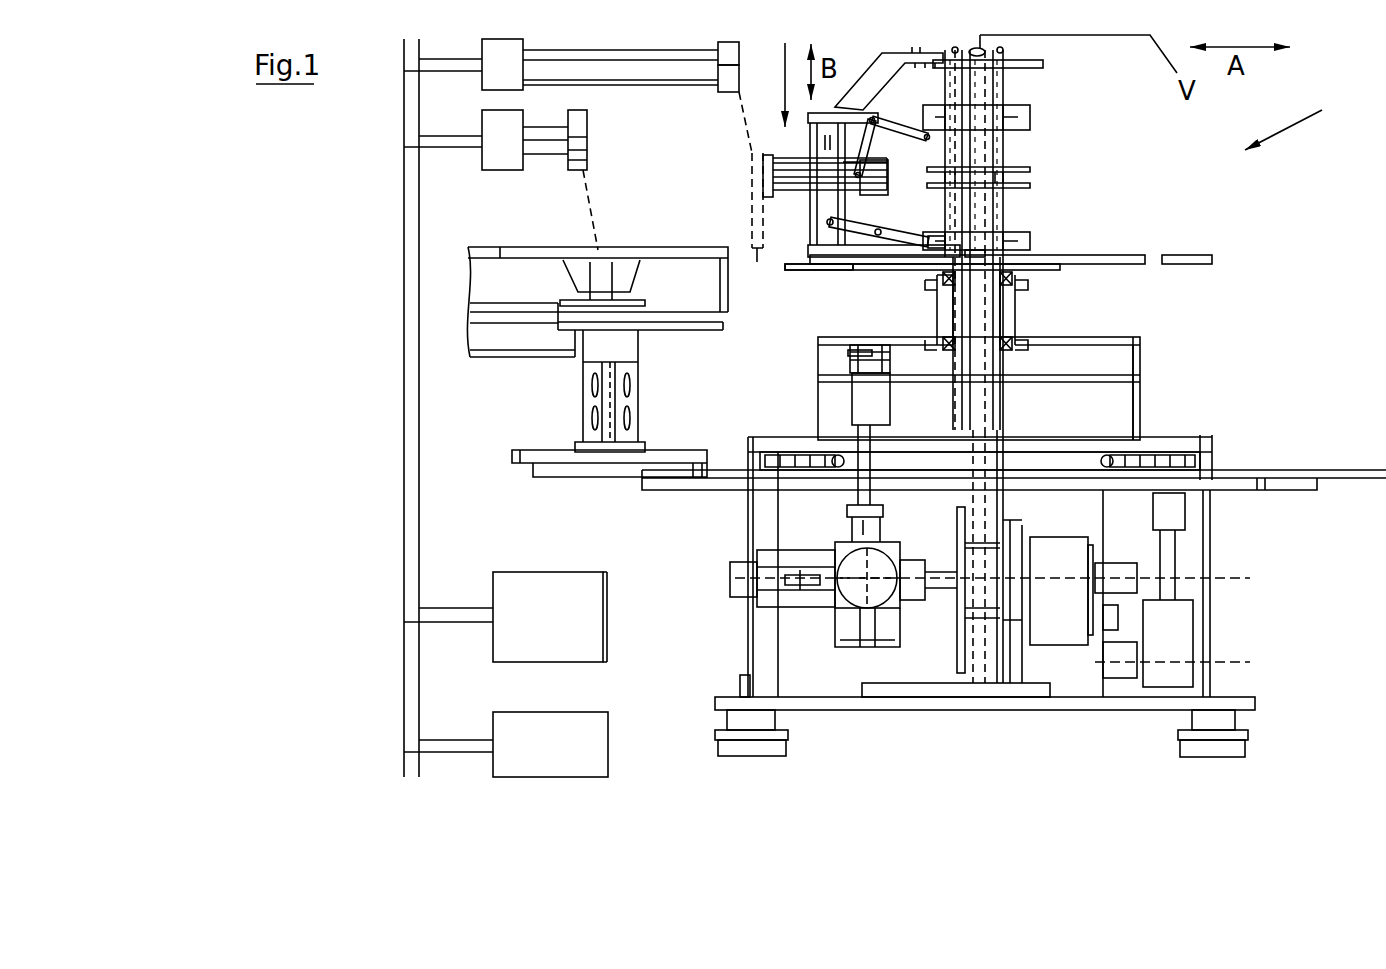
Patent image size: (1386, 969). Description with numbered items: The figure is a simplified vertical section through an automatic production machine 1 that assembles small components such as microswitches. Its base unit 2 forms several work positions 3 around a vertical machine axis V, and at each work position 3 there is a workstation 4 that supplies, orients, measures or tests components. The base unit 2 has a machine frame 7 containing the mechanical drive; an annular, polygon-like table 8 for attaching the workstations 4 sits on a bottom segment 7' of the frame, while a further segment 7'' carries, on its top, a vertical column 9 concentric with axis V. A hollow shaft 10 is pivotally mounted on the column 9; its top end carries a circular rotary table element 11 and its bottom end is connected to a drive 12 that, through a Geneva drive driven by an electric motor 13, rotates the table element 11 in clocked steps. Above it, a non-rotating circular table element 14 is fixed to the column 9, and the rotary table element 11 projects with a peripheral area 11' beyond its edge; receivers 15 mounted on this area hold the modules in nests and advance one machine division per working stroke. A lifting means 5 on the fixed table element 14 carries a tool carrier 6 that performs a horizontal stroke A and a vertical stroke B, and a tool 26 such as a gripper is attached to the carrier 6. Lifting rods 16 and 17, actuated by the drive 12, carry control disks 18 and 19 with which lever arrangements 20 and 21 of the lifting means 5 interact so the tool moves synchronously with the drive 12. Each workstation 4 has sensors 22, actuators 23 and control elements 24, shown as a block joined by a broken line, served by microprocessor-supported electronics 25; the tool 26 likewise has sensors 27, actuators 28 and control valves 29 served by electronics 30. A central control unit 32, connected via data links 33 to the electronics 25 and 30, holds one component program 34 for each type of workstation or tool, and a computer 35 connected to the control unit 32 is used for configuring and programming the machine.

The automatic production machine 1 is at (1296, 118).
The base unit 2 is at (1150, 357).
The work position 3 is at (683, 143).
The workstation 4 is at (645, 215).
The lifting means 5 is at (775, 85).
The tool carrier 6 is at (755, 152).
The machine frame 7 is at (1027, 593).
The bottom segment of the machine frame 7' is at (1274, 593).
The segment of the machine frame 7'' is at (1217, 392).
The annular table 8 is at (623, 463).
The vertical column 9 is at (998, 307).
The hollow shaft 10 is at (942, 298).
The rotary table element 11 is at (922, 296).
The peripheral area of the rotary table element 11' is at (797, 315).
The drive 12 is at (1088, 350).
The electric motor 13 is at (848, 355).
The table element 14 is at (1130, 260).
The receiver 15 is at (1200, 258).
The lifting rod 16 is at (947, 155).
The lifting rod 17 is at (993, 157).
The control disk 18 is at (1007, 103).
The control disk 19 is at (1007, 232).
The lever arrangement 20 is at (877, 103).
The lever arrangement 21 is at (875, 215).
The sensor 22 is at (577, 110).
The actuator 23 is at (588, 183).
The control element 24 is at (573, 157).
The microprocessor-supported electronics 25 is at (497, 157).
The tool 26 is at (764, 258).
The sensor 27 is at (727, 50).
The actuator 28 is at (728, 65).
The control valve 29 is at (733, 93).
The microprocessor-supported electronics 30 is at (497, 60).
The central control unit 32 is at (548, 617).
The data link 33 is at (411, 556).
The component program 34 is at (607, 623).
The computer 35 is at (550, 744).